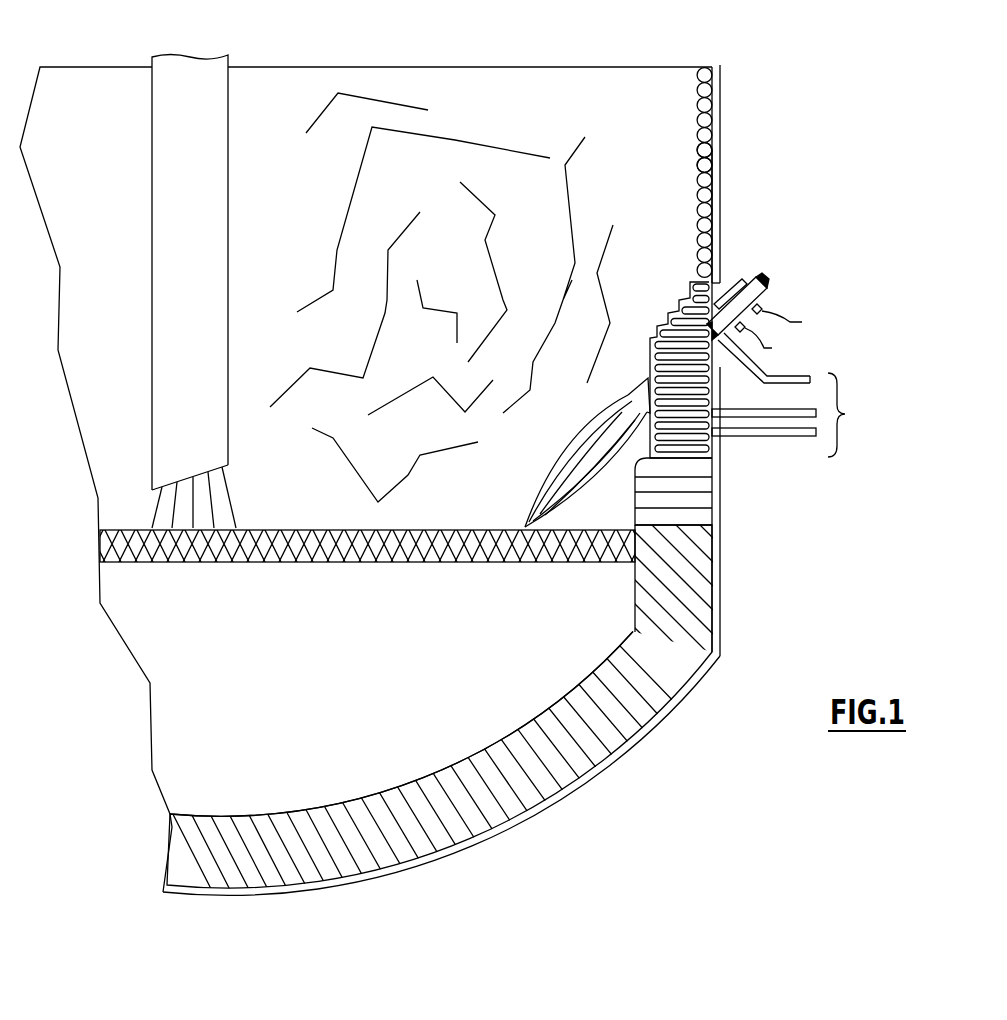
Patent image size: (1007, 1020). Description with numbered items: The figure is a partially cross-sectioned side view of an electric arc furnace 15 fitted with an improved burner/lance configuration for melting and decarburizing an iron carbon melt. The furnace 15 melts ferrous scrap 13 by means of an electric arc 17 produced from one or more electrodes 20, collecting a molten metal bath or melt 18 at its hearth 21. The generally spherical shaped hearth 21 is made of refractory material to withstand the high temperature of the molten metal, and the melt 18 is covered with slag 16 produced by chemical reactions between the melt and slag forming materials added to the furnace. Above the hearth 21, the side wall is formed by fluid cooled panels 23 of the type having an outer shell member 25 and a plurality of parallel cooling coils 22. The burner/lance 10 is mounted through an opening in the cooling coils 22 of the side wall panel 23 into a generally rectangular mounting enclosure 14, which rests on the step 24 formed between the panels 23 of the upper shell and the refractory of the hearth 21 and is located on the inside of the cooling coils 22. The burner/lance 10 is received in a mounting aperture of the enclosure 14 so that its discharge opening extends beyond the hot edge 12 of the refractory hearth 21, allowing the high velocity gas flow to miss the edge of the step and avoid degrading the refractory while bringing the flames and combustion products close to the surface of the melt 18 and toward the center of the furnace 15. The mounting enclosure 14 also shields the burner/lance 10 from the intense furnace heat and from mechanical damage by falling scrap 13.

The burner/lance 10 is at (743, 276).
The hot edge 12 is at (630, 496).
The ferrous scrap 13 is at (467, 274).
The mounting enclosure 14 is at (671, 296).
The electric arc furnace 15 is at (849, 111).
The slag 16 is at (448, 528).
The electric arc 17 is at (233, 499).
The molten metal bath 18 is at (541, 626).
The electrode 20 is at (215, 183).
The hearth 21 is at (541, 737).
The cooling coils 22 is at (696, 163).
The fluid cooled panel 23 is at (686, 101).
The step 24 is at (701, 470).
The outer shell member 25 is at (721, 196).